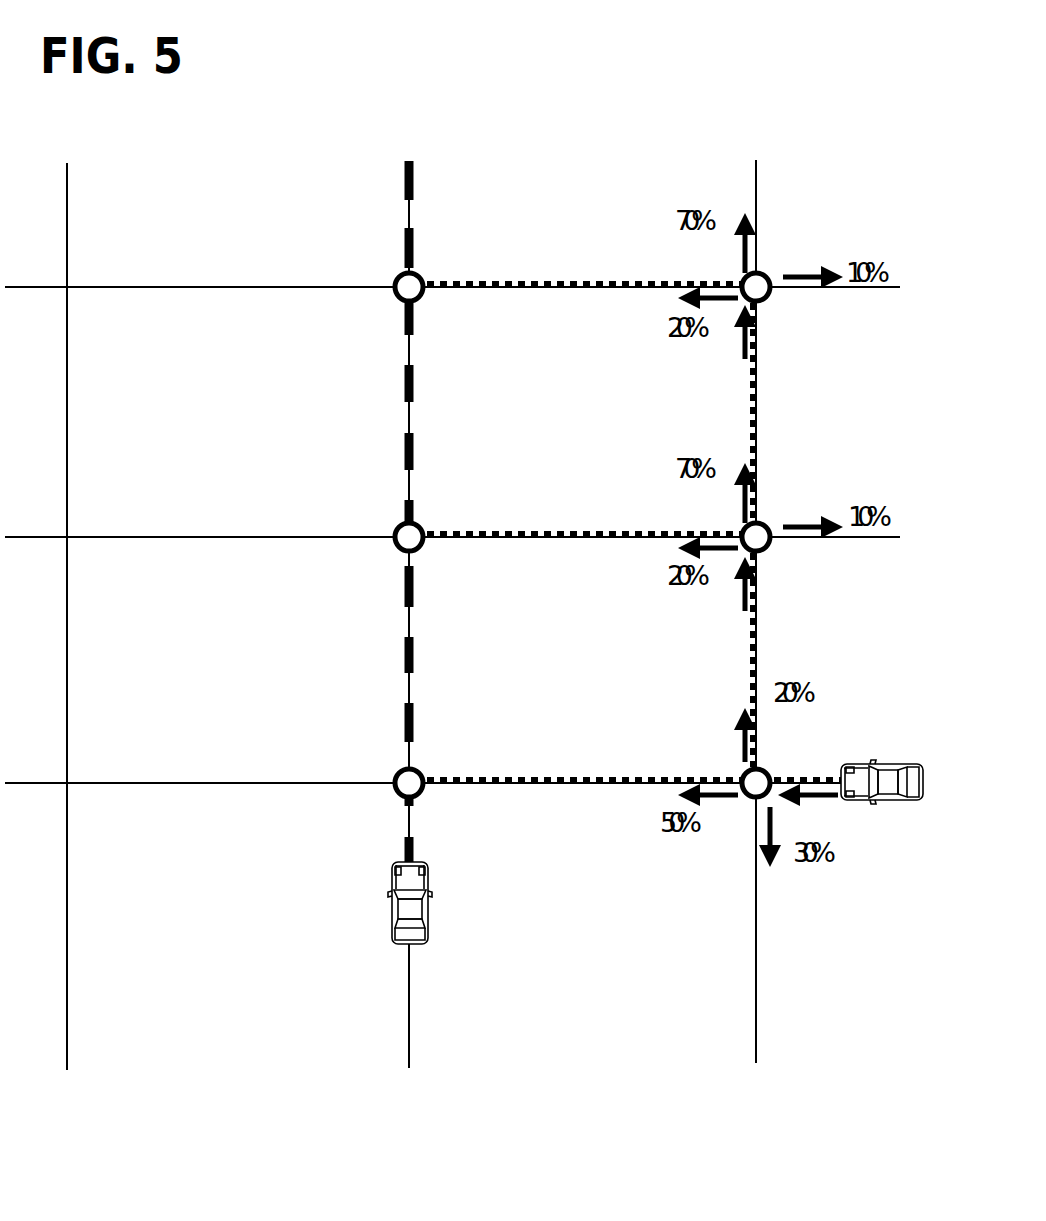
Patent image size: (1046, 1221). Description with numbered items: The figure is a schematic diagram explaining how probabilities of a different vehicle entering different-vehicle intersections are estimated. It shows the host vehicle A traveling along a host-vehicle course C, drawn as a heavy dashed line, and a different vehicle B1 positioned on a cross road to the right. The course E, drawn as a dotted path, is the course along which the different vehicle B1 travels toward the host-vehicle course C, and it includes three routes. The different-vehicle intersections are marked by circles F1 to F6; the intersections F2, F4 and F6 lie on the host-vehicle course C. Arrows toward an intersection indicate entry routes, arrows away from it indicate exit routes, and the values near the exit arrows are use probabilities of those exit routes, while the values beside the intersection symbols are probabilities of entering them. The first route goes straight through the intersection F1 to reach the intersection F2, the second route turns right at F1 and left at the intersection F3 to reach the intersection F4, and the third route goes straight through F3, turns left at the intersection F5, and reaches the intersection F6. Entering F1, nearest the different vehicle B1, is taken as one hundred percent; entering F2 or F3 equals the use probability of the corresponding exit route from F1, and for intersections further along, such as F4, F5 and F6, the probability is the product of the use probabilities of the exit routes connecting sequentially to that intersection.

The host-vehicle course C is at (413, 182).
The course E is at (608, 786).
The different-vehicle intersection F1 is at (771, 774).
The different-vehicle intersection F2 is at (424, 766).
The different-vehicle intersection F3 is at (771, 528).
The different-vehicle intersection F4 is at (424, 520).
The different-vehicle intersection F5 is at (771, 278).
The different-vehicle intersection F6 is at (424, 270).
The host vehicle A is at (425, 943).
The different vehicle B1 is at (880, 801).